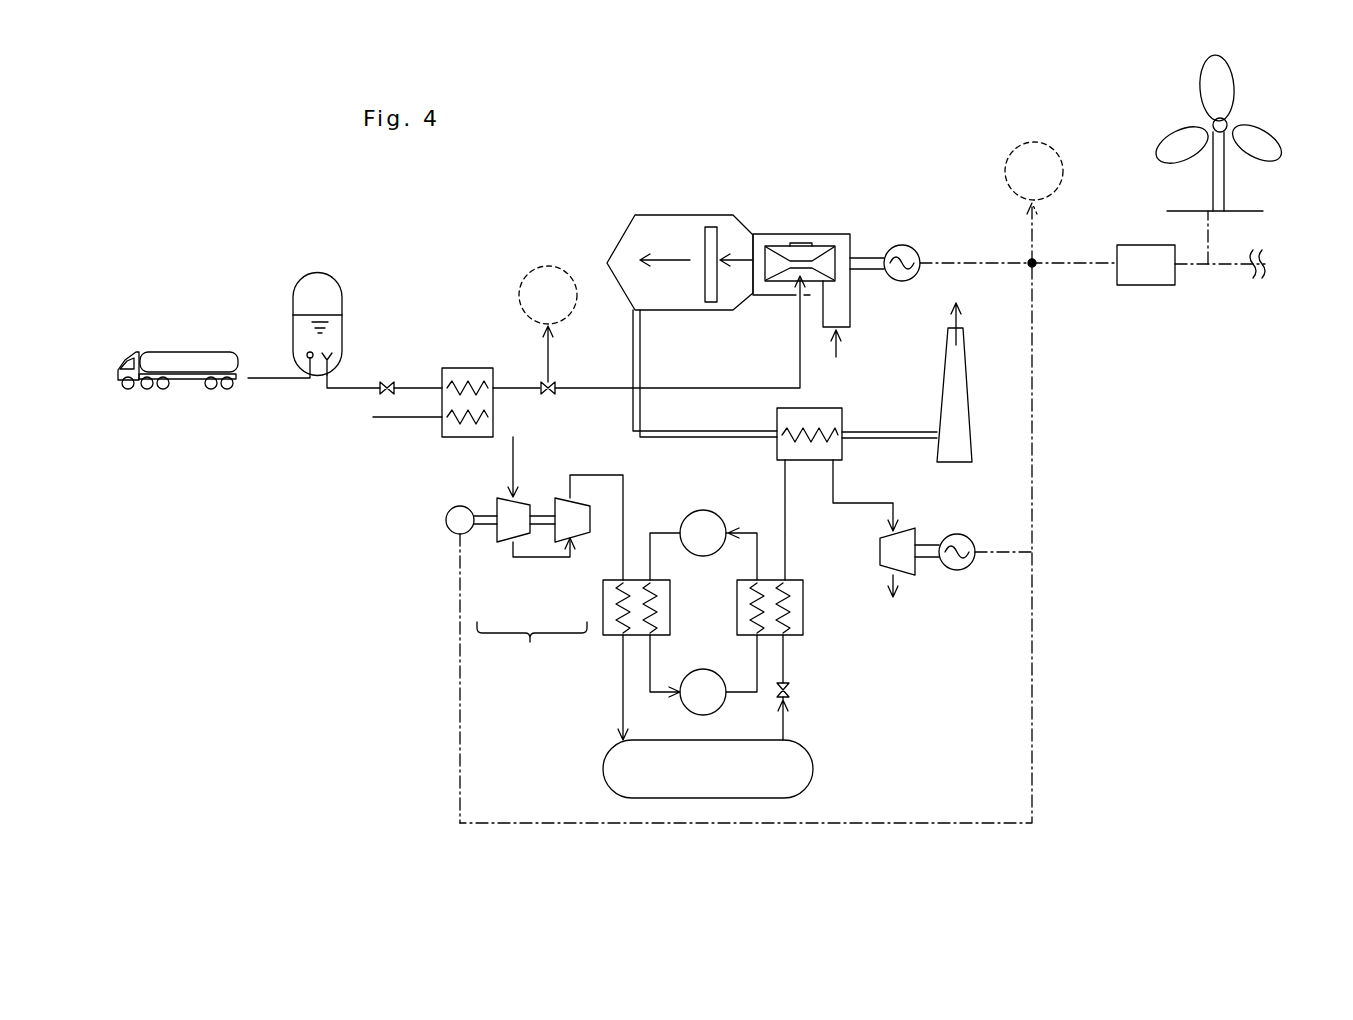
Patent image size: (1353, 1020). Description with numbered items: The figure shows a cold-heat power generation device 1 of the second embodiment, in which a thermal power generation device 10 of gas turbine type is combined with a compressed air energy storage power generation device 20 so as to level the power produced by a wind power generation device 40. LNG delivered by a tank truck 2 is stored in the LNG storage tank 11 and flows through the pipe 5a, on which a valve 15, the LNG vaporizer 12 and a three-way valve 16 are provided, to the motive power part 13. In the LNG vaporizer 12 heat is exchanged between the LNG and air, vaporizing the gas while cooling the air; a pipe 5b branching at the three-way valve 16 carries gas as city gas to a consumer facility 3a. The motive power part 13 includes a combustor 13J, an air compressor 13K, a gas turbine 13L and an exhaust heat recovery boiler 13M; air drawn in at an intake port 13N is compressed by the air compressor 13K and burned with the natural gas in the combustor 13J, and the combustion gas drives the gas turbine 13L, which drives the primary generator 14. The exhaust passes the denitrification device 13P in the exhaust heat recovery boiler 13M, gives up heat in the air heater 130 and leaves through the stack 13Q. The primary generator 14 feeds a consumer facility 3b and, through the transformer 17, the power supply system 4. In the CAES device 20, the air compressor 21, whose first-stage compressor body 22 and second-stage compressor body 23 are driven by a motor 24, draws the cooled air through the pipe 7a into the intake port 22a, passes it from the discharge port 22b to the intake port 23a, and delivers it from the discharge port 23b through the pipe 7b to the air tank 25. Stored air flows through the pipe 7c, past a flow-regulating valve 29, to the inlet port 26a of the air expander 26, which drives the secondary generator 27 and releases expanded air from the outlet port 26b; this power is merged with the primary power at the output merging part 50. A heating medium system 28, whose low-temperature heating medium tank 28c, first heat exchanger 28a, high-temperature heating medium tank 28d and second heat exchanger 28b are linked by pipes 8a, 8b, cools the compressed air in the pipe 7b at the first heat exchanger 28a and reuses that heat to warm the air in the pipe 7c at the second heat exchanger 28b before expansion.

The cold-heat power generation device 1 is at (262, 247).
The tank truck 2 is at (125, 356).
The LNG storage tank 11 is at (318, 272).
The valve 15 is at (380, 392).
The pipe 5a is at (408, 382).
The LNG vaporizer 12 is at (460, 368).
The three-way valve 16 is at (544, 383).
The pipe 5b is at (552, 346).
The consumer facility 3a is at (521, 286).
The consumer facility 3b is at (1006, 165).
The thermal power generation device 10 is at (803, 195).
The motive power part 13 is at (633, 190).
The exhaust heat recovery boiler 13M is at (630, 228).
The denitrification device 13P is at (700, 227).
The gas turbine 13L is at (770, 242).
The air compressor 13K is at (838, 234).
The combustor 13J is at (797, 283).
The intake port 13N is at (848, 318).
The air heater 130 is at (835, 410).
The stack 13Q is at (963, 355).
The primary generator 14 is at (917, 250).
The output merging part 50 is at (1036, 260).
The transformer 17 is at (1133, 287).
The power supply system 4 is at (1236, 268).
The wind power generation device 40 is at (1230, 73).
The CAES power generation device 20 is at (412, 628).
The air compressor 21 is at (532, 650).
The first-stage compressor body 22 is at (500, 545).
The intake port 22a is at (508, 496).
The discharge port 22b is at (502, 544).
The second-stage compressor body 23 is at (556, 542).
The intake port 23a is at (571, 540).
The discharge port 23b is at (570, 496).
The motor 24 is at (444, 520).
The pipe 7a is at (620, 473).
The pipe 7b is at (622, 712).
The pipe 7c is at (788, 713).
The heating medium system 28 is at (693, 483).
The first heat exchanger 28a is at (640, 580).
The second heat exchanger 28b is at (805, 625).
The low-temperature heating medium tank 28c is at (713, 517).
The high-temperature heating medium tank 28d is at (712, 710).
The pipe 8a is at (651, 650).
The pipe 8b is at (757, 563).
The air expander 26 is at (880, 550).
The inlet port 26a is at (889, 533).
The outlet port 26b is at (892, 578).
The secondary generator 27 is at (962, 570).
The valve 29 is at (795, 690).
The air tank 25 is at (813, 770).